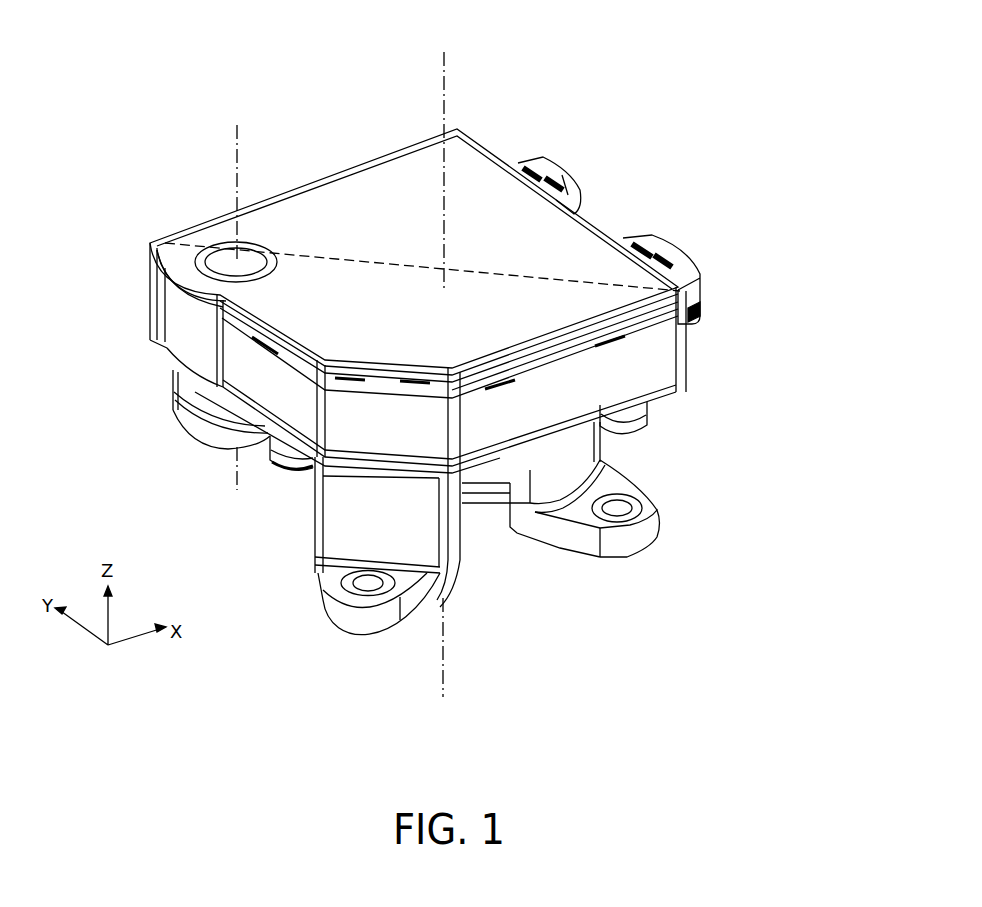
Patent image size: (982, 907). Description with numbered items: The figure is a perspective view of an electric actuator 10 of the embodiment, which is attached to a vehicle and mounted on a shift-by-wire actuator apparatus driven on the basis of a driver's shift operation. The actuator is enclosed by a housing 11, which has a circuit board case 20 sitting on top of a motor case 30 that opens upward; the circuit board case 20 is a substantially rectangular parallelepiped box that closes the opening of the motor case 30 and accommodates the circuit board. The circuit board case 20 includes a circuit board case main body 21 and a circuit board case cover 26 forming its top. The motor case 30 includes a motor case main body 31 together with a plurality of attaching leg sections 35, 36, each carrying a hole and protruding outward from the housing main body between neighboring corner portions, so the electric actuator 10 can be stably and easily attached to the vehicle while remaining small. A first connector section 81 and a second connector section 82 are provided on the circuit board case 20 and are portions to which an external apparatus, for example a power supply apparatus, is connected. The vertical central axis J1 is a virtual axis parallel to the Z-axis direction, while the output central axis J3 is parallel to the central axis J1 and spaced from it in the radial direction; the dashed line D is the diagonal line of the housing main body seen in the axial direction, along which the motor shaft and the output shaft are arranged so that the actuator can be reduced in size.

The electric actuator 10 is at (630, 110).
The housing 11 is at (785, 337).
The circuit board case 20 is at (696, 350).
The circuit board case main body 21 is at (148, 283).
The circuit board case cover 26 is at (377, 188).
The motor case 30 is at (655, 488).
The motor case main body 31 is at (492, 472).
The attaching leg section 35 is at (580, 545).
The attaching leg section 36 is at (407, 585).
The first connector section 81 is at (552, 162).
The second connector section 82 is at (666, 240).
The diagonal line D is at (195, 228).
The central axis J1 is at (445, 105).
The output central axis J3 is at (238, 153).